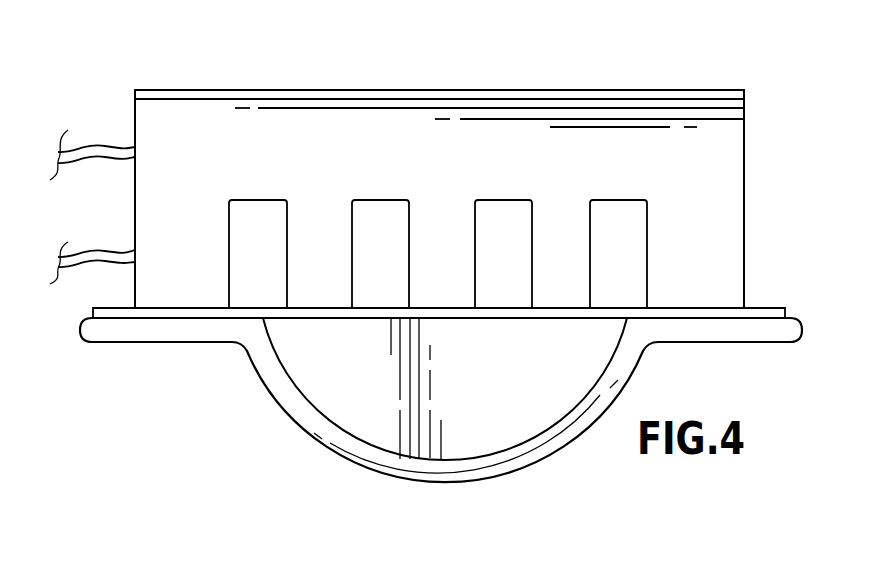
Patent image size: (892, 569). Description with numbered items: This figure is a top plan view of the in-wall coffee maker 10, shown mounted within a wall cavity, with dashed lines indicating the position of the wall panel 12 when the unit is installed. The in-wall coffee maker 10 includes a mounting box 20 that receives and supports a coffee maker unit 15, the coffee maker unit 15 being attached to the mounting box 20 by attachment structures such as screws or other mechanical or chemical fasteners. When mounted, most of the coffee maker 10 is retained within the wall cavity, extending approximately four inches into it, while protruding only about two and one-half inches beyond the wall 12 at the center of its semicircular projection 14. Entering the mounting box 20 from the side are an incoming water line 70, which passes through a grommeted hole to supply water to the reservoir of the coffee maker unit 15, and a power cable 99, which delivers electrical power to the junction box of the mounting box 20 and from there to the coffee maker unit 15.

The in-wall coffee maker 10 is at (794, 113).
The wall panel 12 is at (765, 305).
The semicircular projection 14 is at (285, 413).
The coffee maker unit 15 is at (692, 343).
The mounting box 20 is at (134, 109).
The incoming water line 70 is at (82, 150).
The power cable 99 is at (90, 255).